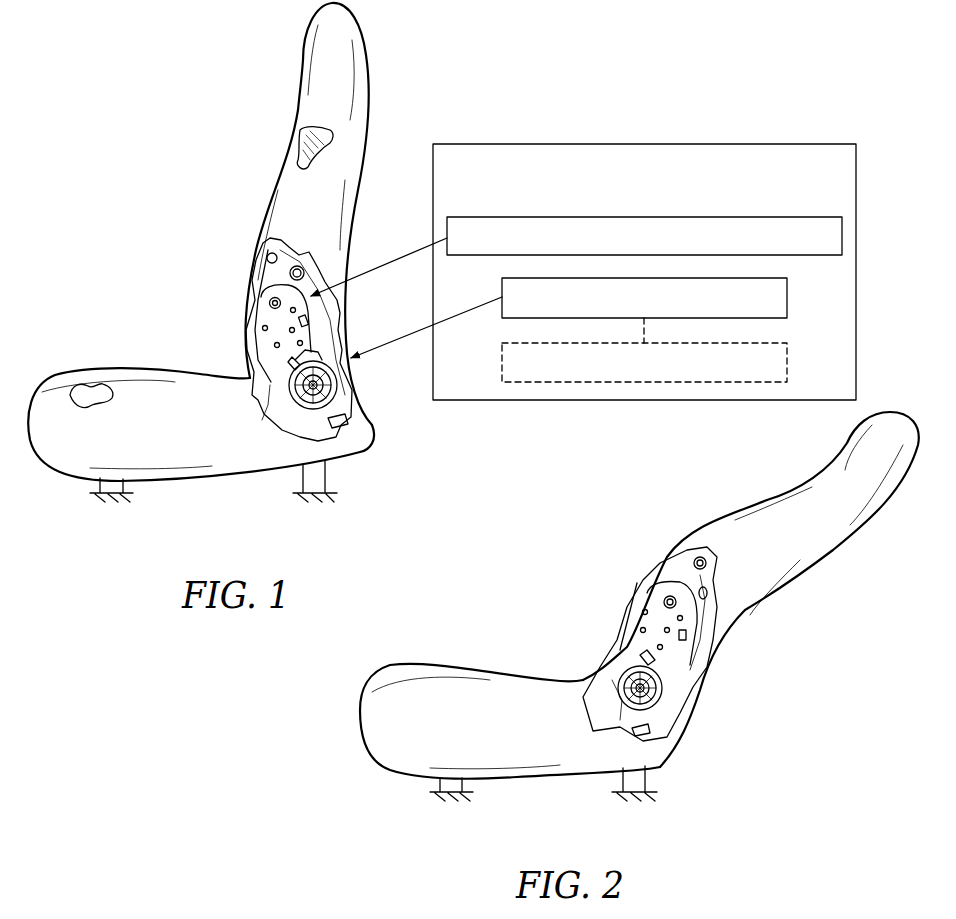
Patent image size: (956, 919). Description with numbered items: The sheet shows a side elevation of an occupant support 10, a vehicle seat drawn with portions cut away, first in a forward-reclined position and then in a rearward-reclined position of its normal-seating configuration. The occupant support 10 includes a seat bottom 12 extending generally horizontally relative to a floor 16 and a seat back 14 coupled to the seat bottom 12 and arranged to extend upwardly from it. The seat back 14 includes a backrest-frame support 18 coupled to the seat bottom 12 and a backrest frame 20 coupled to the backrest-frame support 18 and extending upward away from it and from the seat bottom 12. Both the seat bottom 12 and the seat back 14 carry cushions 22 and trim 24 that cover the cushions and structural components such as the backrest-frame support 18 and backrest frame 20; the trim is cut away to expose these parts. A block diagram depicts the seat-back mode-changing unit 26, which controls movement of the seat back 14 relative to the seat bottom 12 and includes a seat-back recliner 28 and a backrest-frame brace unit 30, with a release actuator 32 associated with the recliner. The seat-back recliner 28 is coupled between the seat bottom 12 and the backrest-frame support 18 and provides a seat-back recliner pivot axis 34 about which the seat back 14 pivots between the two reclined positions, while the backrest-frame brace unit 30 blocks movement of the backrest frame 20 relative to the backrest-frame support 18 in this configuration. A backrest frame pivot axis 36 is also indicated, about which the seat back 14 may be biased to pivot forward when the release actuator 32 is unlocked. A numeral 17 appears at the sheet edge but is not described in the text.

In FIG. 1, the occupant support 10 is at (182, 47).
In FIG. 2, the occupant support 10 is at (630, 493).
In FIG. 1, the seat bottom 12 is at (86, 340).
In FIG. 2, the seat bottom 12 is at (487, 652).
In FIG. 1, the seat back 14 is at (182, 183).
In FIG. 2, the seat back 14 is at (716, 497).
In FIG. 1, the floor 16 is at (335, 497).
In FIG. 2, the floor 16 is at (653, 796).
In FIG. 2, the seat frame 17 is at (258, 917).
In FIG. 1, the backrest-frame support 18 is at (253, 329).
In FIG. 2, the backrest-frame support 18 is at (640, 619).
In FIG. 1, the backrest frame 20 is at (309, 260).
In FIG. 2, the backrest frame 20 is at (705, 639).
In FIG. 1, the cushions 22 is at (292, 157).
In FIG. 1, the trim 24 is at (307, 118).
In FIG. 1, the seat-back mode-changing unit 26 is at (644, 144).
In FIG. 1, the seat-back recliner 28 is at (787, 300).
In FIG. 2, the seat-back recliner 28 is at (683, 683).
In FIG. 1, the backrest-frame brace unit 30 is at (842, 236).
In FIG. 1, the release actuator 32 is at (787, 362).
In FIG. 1, the seat-back recliner pivot axis 34 is at (333, 383).
In FIG. 2, the seat-back recliner pivot axis 34 is at (660, 690).
In FIG. 1, the backrest frame pivot axis 36 is at (270, 302).
In FIG. 2, the backrest frame pivot axis 36 is at (665, 598).